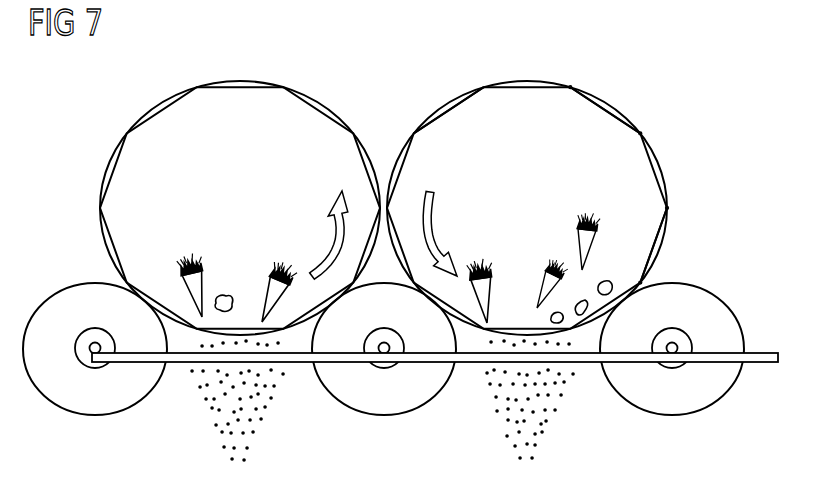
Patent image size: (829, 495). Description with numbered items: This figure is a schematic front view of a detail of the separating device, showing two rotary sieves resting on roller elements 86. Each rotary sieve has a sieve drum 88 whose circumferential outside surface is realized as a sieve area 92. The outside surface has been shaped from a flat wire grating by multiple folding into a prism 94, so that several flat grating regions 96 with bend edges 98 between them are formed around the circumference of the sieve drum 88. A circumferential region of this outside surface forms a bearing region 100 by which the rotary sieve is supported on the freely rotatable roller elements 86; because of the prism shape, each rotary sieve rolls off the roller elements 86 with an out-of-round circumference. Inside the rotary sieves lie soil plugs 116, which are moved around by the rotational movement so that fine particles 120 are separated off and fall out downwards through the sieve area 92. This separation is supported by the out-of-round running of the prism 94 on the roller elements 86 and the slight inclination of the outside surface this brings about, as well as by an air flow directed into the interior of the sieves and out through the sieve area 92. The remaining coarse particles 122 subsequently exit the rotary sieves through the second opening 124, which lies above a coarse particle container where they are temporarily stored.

The roller elements 86 is at (92, 406).
The sieve drum 88 is at (163, 109).
The sieve area 92 is at (607, 112).
The prism 94 is at (458, 105).
The flat grating regions 96 is at (655, 244).
The bend edges 98 is at (573, 89).
The bearing region 100 is at (106, 139).
The soil plugs 116 is at (183, 286).
The fine particles 120 is at (201, 421).
The coarse particles 122 is at (226, 296).
The second opening 124 is at (303, 126).